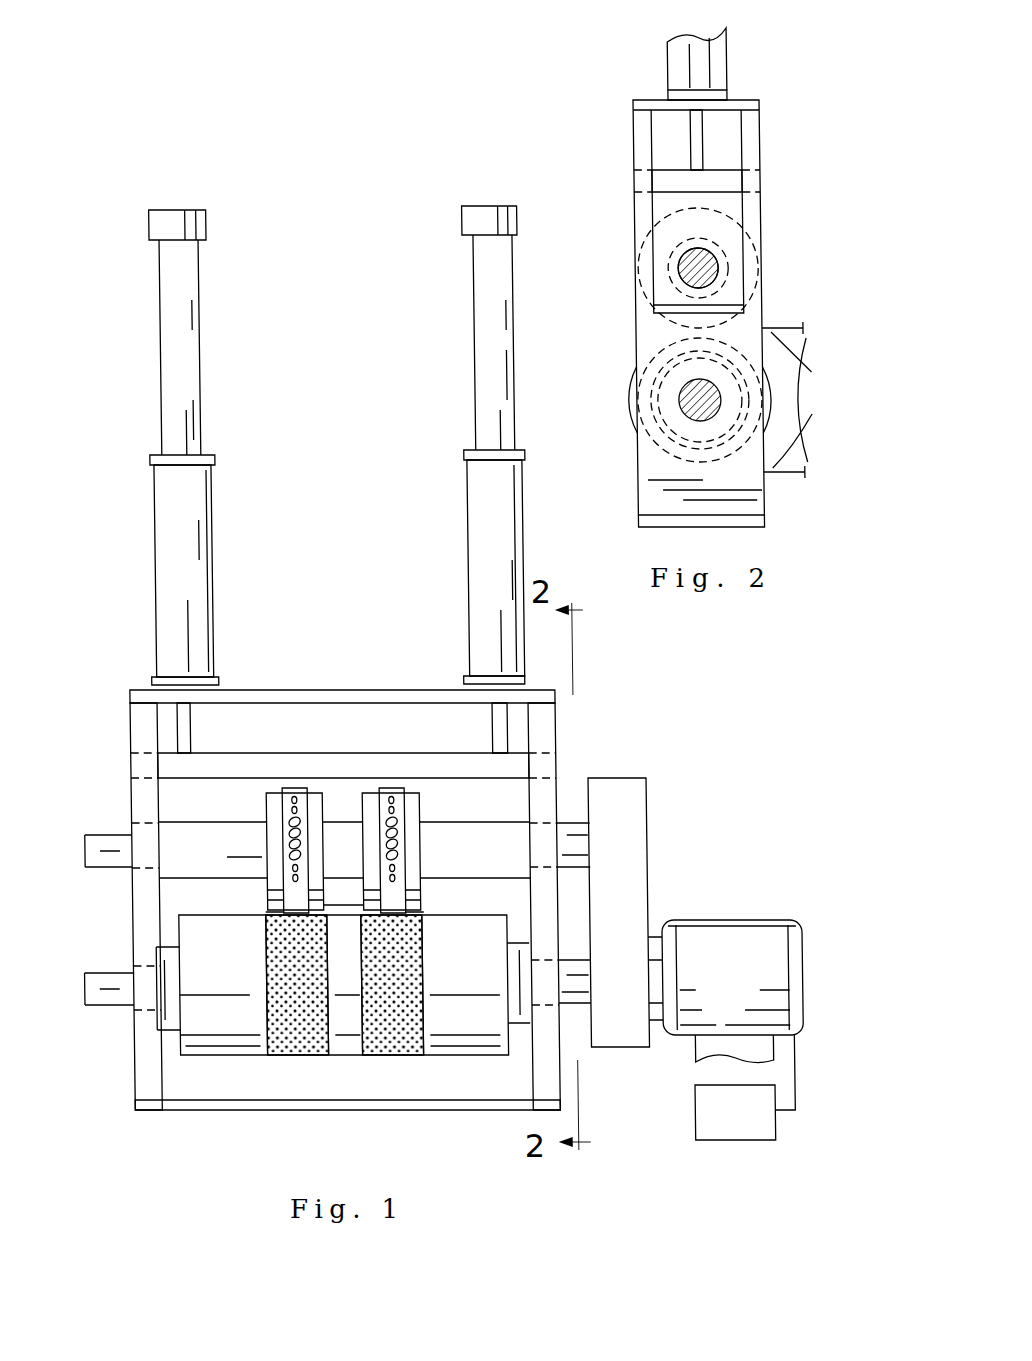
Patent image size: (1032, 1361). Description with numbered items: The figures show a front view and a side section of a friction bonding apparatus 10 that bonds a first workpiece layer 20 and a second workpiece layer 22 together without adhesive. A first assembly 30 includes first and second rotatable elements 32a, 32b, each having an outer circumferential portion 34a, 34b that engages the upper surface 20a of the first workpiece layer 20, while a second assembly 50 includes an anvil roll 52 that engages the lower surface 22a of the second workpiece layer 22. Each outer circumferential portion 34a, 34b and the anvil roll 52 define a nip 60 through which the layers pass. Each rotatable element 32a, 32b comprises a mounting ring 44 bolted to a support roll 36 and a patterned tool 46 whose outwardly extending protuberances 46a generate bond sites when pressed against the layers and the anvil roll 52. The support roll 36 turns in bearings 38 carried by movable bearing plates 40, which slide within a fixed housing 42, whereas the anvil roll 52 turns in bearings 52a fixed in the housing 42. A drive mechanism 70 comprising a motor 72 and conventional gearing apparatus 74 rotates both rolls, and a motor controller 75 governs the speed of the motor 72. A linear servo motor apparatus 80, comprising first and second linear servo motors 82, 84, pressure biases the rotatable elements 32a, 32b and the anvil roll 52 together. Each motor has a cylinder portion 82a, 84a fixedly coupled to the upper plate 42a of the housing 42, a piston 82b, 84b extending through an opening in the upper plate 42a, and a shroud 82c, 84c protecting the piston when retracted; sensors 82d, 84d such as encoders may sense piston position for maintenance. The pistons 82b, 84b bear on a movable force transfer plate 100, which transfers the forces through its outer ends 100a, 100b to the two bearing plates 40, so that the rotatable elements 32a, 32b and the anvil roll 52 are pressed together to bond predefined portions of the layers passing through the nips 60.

In FIG. 1, the apparatus 10 is at (304, 662).
In FIG. 1, the first workpiece layer 20 is at (389, 1056).
In FIG. 2, the first workpiece layer 20 is at (700, 400).
In FIG. 1, the upper surface 20a is at (281, 1046).
In FIG. 2, the upper surface 20a is at (779, 328).
In FIG. 2, the second workpiece layer 22 is at (811, 403).
In FIG. 2, the lower surface 22a is at (819, 360).
In FIG. 1, the first assembly 30 is at (505, 798).
In FIG. 1, the first rotatable element 32a is at (297, 791).
In FIG. 1, the second rotatable element 32b is at (392, 791).
In FIG. 1, the outer circumferential portion 34a is at (282, 813).
In FIG. 1, the outer circumferential portion 34b is at (404, 813).
In FIG. 1, the support roll 36 is at (163, 878).
In FIG. 2, the support roll 36 is at (686, 274).
In FIG. 2, the bearings 38 is at (729, 265).
In FIG. 1, the bearing plates 40 is at (130, 800).
In FIG. 2, the bearing plates 40 is at (732, 212).
In FIG. 1, the fixed housing 42 is at (137, 1070).
In FIG. 2, the fixed housing 42 is at (748, 512).
In FIG. 1, the upper plate 42a is at (339, 702).
In FIG. 1, the mounting ring 44 is at (316, 906).
In FIG. 1, the patterned tool 46 is at (288, 828).
In FIG. 1, the protuberances 46a is at (300, 840).
In FIG. 1, the second assembly 50 is at (184, 1080).
In FIG. 1, the anvil roll 52 is at (492, 1098).
In FIG. 2, the anvil roll 52 is at (678, 408).
In FIG. 2, the bearings 52a is at (661, 398).
In FIG. 1, the nip 60 is at (265, 912).
In FIG. 1, the drive mechanism 70 is at (657, 832).
In FIG. 1, the motor 72 is at (714, 984).
In FIG. 1, the gearing apparatus 74 is at (627, 872).
In FIG. 1, the motor controller 75 is at (713, 1136).
In FIG. 1, the linear servo motor apparatus 80 is at (300, 316).
In FIG. 1, the first linear servo motor 82 is at (227, 424).
In FIG. 1, the cylinder portion 82a is at (215, 500).
In FIG. 1, the piston 82b is at (187, 742).
In FIG. 1, the shroud 82c is at (189, 407).
In FIG. 1, the sensor 82d is at (173, 218).
In FIG. 1, the second linear servo motor 84 is at (450, 421).
In FIG. 1, the cylinder portion 84a is at (479, 525).
In FIG. 1, the piston 84b is at (499, 745).
In FIG. 2, the piston 84b is at (689, 142).
In FIG. 1, the shroud 84c is at (487, 375).
In FIG. 1, the sensor 84d is at (485, 220).
In FIG. 1, the force transfer plate 100 is at (247, 766).
In FIG. 2, the force transfer plate 100 is at (662, 183).
In FIG. 1, the outer end 100a is at (140, 762).
In FIG. 1, the outer end 100b is at (540, 762).
In FIG. 2, the outer end 100b is at (721, 180).